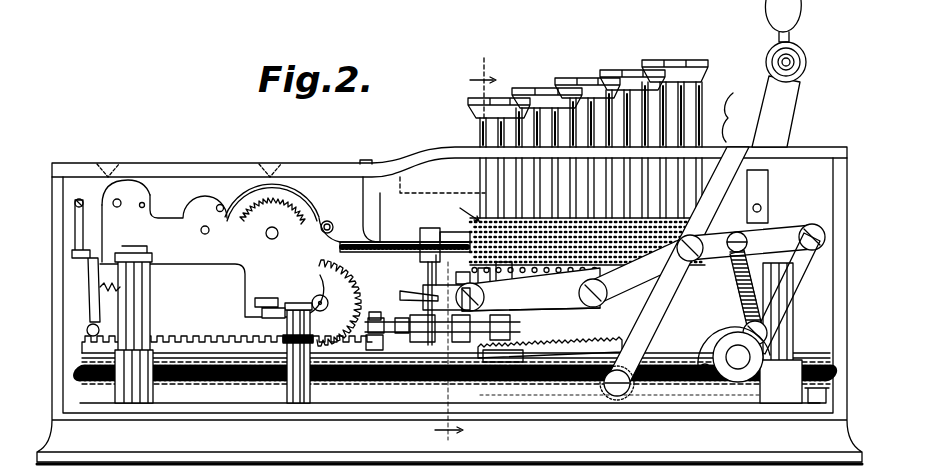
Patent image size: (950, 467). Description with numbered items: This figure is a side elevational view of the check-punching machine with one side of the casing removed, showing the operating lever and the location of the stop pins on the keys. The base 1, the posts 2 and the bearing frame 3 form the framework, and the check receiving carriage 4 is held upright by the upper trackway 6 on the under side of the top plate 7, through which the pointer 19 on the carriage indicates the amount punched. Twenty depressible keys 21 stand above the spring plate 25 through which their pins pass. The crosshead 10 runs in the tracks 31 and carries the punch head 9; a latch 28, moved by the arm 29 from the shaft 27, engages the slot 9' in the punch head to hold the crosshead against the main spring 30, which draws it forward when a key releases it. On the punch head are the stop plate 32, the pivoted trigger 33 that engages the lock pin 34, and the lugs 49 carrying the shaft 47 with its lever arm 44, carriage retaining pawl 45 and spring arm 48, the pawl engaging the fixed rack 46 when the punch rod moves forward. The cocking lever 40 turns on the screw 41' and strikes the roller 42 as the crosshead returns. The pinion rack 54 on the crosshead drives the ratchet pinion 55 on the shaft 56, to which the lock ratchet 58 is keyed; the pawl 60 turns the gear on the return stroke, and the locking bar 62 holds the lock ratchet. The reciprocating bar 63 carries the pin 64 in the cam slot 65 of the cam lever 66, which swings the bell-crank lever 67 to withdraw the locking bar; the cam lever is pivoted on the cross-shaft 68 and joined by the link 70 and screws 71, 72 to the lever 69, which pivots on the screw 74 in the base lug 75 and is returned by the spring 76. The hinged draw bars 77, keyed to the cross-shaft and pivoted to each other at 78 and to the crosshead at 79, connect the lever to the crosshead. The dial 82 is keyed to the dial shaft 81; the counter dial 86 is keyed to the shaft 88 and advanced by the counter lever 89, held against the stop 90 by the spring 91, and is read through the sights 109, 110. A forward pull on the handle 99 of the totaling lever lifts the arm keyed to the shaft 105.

The base 1 is at (449, 311).
The posts 2 is at (142, 298).
The bearing frame 3 is at (298, 254).
The check receiving carriage 4 is at (385, 209).
The upper trackway 6 is at (428, 193).
The top plate 7 is at (458, 146).
The punch head 9 is at (443, 297).
The slot 9' is at (412, 290).
The crosshead 10 is at (382, 332).
The pointer 19 is at (372, 162).
The depressible keys 21 is at (640, 66).
The spring plate 25 is at (464, 209).
The shaft 27 is at (452, 226).
The latch 28 is at (421, 279).
The arm 29 is at (428, 228).
The main spring 30 is at (258, 384).
The tracks 31 is at (197, 390).
The stop plate 32 is at (490, 266).
The pivoted trigger 33 is at (462, 271).
The lock pin 34 is at (436, 264).
The cocking lever 40 is at (380, 334).
The screw 41' is at (390, 376).
The roller 42 is at (372, 351).
The lever arm 44 is at (548, 308).
The carriage retaining pawl 45 is at (508, 328).
The fixed rack 46 is at (572, 349).
The shaft 47 is at (462, 312).
The spring arm 48 is at (402, 334).
The lugs 49 is at (483, 356).
The pinion rack 54 is at (222, 333).
The ratchet pinion 55 is at (306, 304).
The shaft 56 is at (323, 299).
The lock ratchet 58 is at (356, 280).
The pawl 60 is at (330, 221).
The reciprocating locking bar 62 is at (264, 298).
The reciprocating bar 63 is at (688, 390).
The pin 64 is at (735, 384).
The cam slot 65 is at (745, 328).
The cam lever 66 is at (790, 287).
The bell-crank lever 67 is at (295, 392).
The cross-shaft 68 is at (812, 398).
The lever 69 is at (687, 267).
The link 70 is at (751, 242).
The screw 71 is at (688, 252).
The screw 72 is at (813, 228).
The screw 74 is at (620, 372).
The base lug 75 is at (617, 397).
The spring 76 is at (732, 286).
The hinged draw bars 77 is at (578, 274).
The pivotal connection 78 is at (593, 307).
The pivotal connection 79 is at (484, 297).
The dial shaft 81 is at (270, 238).
The dial 82 is at (358, 163).
The counter dial 86 is at (140, 182).
The shaft 88 is at (118, 207).
The counter lever 89 is at (91, 304).
The stop 90 is at (96, 326).
The spring 91 is at (100, 288).
The handle 99 is at (764, 73).
The shaft 105 is at (345, 243).
The sight 109 is at (274, 172).
The sight 110 is at (113, 172).